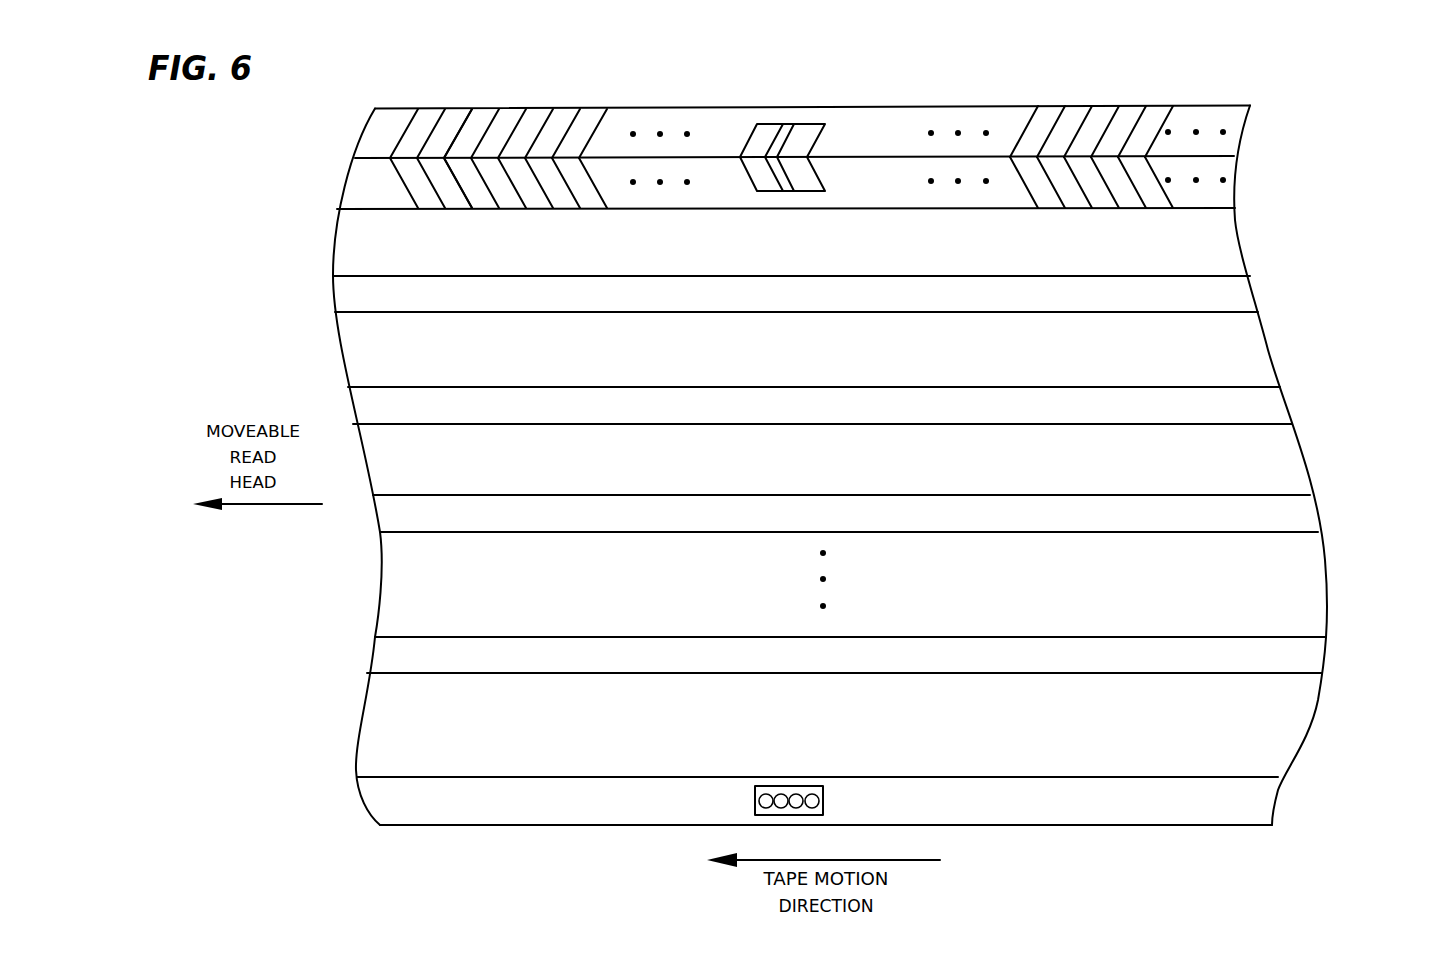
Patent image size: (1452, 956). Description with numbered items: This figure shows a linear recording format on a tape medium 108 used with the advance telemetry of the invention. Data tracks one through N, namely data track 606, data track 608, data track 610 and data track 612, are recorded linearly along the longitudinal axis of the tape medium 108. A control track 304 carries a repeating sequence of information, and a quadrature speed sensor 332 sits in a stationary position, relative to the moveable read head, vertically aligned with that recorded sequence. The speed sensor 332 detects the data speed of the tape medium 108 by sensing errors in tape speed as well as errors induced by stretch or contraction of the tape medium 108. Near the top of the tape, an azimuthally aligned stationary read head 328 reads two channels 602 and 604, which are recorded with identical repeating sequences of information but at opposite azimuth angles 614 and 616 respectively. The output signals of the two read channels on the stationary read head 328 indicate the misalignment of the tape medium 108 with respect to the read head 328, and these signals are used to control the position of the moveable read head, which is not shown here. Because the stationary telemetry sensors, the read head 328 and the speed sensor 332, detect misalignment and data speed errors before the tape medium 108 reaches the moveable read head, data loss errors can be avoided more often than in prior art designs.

The tape medium 108 is at (1300, 445).
The first channel 602 is at (1233, 117).
The second channel 604 is at (1222, 192).
The data track 1 606 is at (1237, 287).
The data track 2 608 is at (1265, 402).
The data track 3 610 is at (1300, 512).
The data track N 612 is at (1308, 650).
The control track 304 is at (1258, 797).
The azimuth angle of first channel 614 is at (458, 128).
The azimuth angle of second channel 616 is at (457, 182).
The azimuthally aligned stationary read head 328 is at (815, 174).
The quadrature speed sensor 332 is at (842, 797).